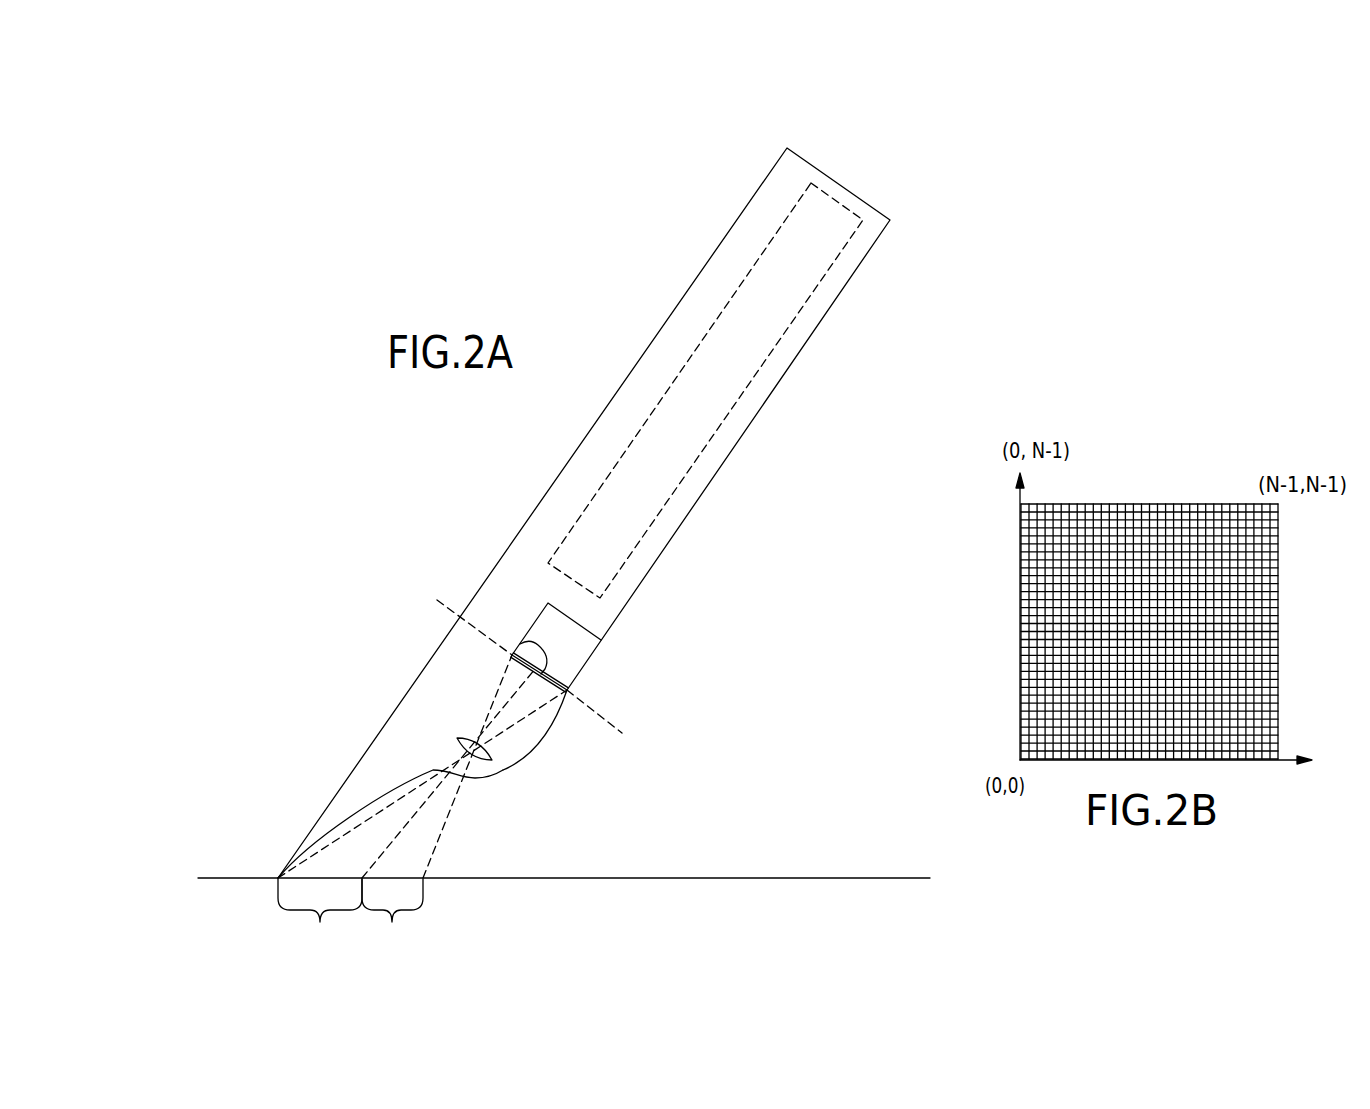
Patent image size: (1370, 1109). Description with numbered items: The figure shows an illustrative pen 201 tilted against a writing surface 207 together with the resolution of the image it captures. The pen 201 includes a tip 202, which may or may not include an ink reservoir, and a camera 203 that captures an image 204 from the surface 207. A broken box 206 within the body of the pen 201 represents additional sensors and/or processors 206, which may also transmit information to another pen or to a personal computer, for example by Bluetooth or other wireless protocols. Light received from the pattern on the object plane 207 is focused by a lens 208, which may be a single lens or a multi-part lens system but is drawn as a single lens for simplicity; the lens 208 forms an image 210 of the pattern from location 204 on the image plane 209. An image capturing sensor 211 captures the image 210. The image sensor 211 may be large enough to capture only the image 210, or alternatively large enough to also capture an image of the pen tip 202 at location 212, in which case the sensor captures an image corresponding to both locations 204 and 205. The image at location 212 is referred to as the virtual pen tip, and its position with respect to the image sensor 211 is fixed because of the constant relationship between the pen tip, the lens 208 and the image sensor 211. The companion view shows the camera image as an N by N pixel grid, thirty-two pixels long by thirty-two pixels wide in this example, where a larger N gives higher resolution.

The pen 201 is at (430, 698).
The tip 202 is at (278, 875).
The camera 203 is at (555, 625).
The image 204 is at (392, 918).
The location 205 is at (320, 918).
The sensors and/or processors 206 is at (705, 393).
The surface 207 is at (605, 878).
The lens 208 is at (497, 770).
The image plane 209 is at (622, 741).
The image 210 is at (538, 643).
The image capturing sensor 211 is at (547, 673).
The location 212 is at (567, 692).